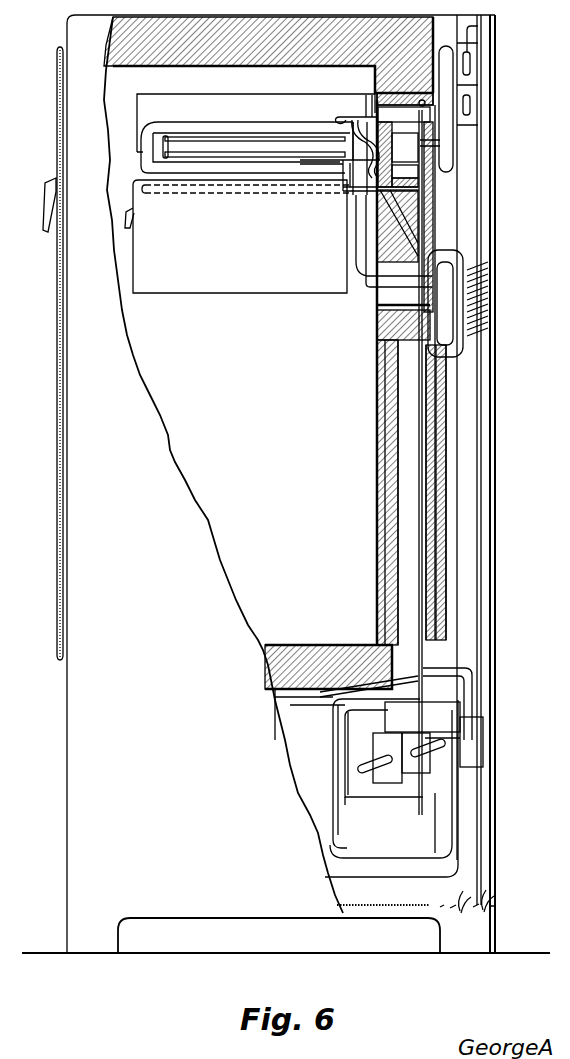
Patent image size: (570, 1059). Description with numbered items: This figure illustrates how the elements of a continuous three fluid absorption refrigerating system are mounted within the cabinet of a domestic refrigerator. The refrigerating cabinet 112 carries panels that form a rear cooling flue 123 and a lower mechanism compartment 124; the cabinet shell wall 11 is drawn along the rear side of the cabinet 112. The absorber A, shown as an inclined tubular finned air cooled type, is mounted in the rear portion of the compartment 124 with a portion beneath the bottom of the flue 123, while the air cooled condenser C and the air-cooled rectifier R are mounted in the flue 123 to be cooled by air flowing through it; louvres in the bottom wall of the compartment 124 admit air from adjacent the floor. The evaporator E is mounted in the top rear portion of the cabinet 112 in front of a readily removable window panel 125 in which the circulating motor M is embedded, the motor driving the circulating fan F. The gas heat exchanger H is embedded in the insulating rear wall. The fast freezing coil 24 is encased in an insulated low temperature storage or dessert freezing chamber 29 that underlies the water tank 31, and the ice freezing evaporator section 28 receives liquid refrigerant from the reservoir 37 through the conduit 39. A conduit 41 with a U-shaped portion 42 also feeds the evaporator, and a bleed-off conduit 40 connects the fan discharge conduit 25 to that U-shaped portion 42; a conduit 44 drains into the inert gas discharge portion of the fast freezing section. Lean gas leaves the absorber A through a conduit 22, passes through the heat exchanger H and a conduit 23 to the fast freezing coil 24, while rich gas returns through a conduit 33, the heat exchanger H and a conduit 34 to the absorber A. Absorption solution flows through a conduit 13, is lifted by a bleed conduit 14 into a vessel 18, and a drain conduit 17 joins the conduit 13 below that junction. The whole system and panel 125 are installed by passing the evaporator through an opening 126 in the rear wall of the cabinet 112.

The cabinet 11 is at (478, 197).
The rear cooling flue 123 is at (470, 416).
The air cooled condenser C is at (480, 78).
The opening 126 is at (402, 76).
The water tank 31 is at (256, 123).
The ice freezing evaporator section 28 is at (247, 147).
The evaporator E is at (145, 178).
The conduit 39 is at (347, 114).
The conduit 41 is at (364, 95).
The reservoir 37 is at (404, 111).
The electrical motor M is at (410, 152).
The circulating fan F is at (410, 174).
The U-shaped portion 42 is at (458, 143).
The bleed-off conduit 40 is at (435, 190).
The conduit 25 is at (356, 163).
The conduit 44 is at (340, 165).
The window panel 125 is at (432, 222).
The conduit 23 is at (416, 248).
The low temperature storage or dessert freezing chamber 29 is at (236, 236).
The fast freezing coil 24 is at (248, 195).
The conduit 33 is at (362, 268).
The gas heat exchanger H is at (410, 450).
The refrigerating cabinet 112 is at (302, 644).
The bleed conduit 14 is at (420, 527).
The conduit 22 is at (428, 640).
The vessel 18 is at (422, 717).
The conduit 13 is at (333, 745).
The drain conduit 17 is at (347, 812).
The conduit 34 is at (358, 732).
The absorber A is at (478, 757).
The lower mechanism compartment 124 is at (391, 788).
The air-cooled rectifier R is at (490, 290).